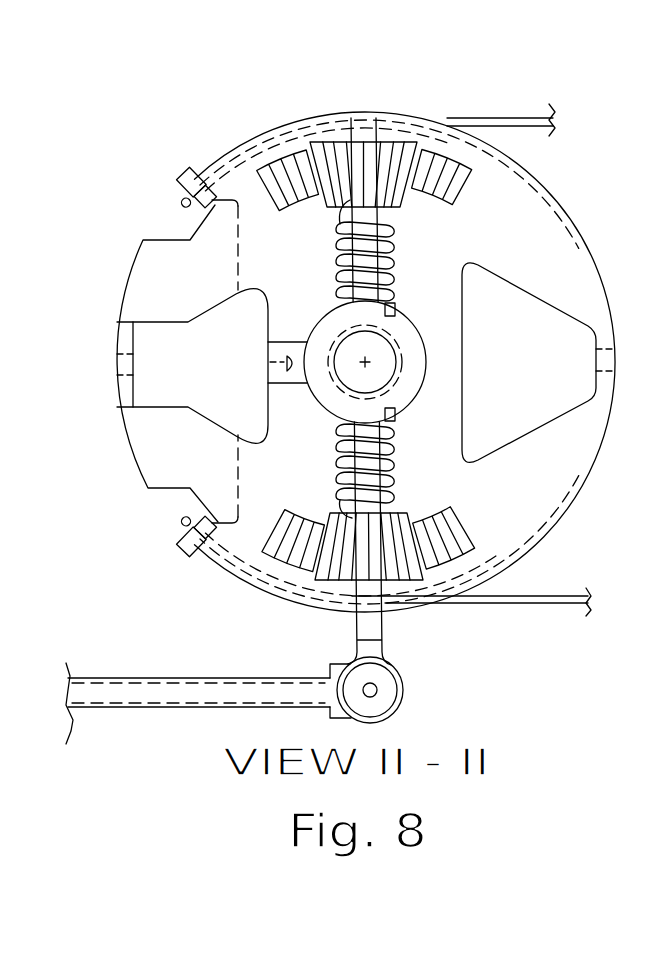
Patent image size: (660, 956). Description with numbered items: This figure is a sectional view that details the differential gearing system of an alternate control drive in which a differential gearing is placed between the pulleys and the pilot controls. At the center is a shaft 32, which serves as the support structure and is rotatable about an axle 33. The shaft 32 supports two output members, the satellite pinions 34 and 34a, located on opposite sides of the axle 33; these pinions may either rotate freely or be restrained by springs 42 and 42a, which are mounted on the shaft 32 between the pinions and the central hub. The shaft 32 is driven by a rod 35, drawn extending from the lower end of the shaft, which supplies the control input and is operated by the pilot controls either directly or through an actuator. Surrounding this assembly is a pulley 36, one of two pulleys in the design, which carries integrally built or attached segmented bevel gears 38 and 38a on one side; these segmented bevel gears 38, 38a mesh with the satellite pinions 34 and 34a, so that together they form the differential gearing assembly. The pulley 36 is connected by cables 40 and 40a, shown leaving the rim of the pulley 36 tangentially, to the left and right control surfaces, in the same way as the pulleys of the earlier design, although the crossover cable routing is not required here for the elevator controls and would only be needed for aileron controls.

The shaft 32 is at (357, 628).
The axle 33 is at (380, 355).
The satellite pinion 34 is at (333, 153).
The satellite pinion 34a is at (401, 568).
The rod 35 is at (168, 690).
The pulley 36 is at (503, 218).
The segmented bevel gear 38 is at (433, 168).
The segmented bevel gear 38a is at (453, 546).
The cable 40 is at (514, 114).
The cable 40a is at (542, 603).
The spring 42 is at (345, 262).
The spring 42a is at (390, 500).